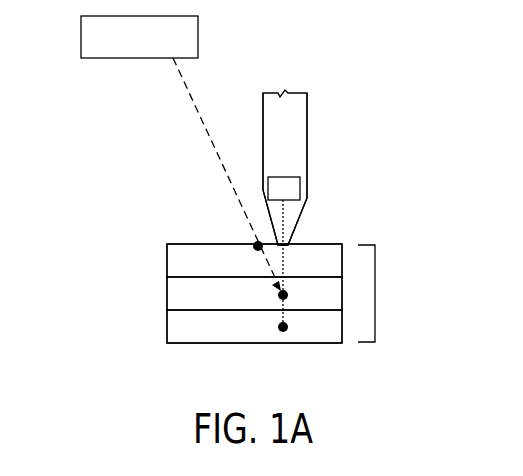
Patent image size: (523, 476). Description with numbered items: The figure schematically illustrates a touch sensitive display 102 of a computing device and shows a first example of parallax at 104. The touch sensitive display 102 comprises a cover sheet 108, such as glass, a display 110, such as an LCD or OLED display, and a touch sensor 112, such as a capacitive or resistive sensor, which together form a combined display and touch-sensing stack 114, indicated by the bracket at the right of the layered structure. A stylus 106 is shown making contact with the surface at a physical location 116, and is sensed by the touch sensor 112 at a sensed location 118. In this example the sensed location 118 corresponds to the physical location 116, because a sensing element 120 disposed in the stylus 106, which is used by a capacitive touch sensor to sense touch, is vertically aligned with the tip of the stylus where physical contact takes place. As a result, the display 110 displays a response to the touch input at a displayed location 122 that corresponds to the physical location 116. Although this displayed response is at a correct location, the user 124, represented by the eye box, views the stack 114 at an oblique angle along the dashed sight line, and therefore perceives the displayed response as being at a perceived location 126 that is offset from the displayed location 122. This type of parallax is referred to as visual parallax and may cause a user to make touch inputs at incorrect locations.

The touch sensitive display 102 is at (72, 292).
The first example of parallax 104 is at (284, 66).
The stylus 106 is at (306, 143).
The cover sheet 108 is at (167, 244).
The display 110 is at (167, 294).
The touch sensor 112 is at (167, 344).
The combined display and touch-sensing stack 114 is at (376, 290).
The physical location 116 is at (290, 244).
The sensed location 118 is at (282, 328).
The sensing element 120 is at (267, 178).
The displayed location 122 is at (278, 295).
The user 124 is at (98, 58).
The perceived location 126 is at (254, 244).